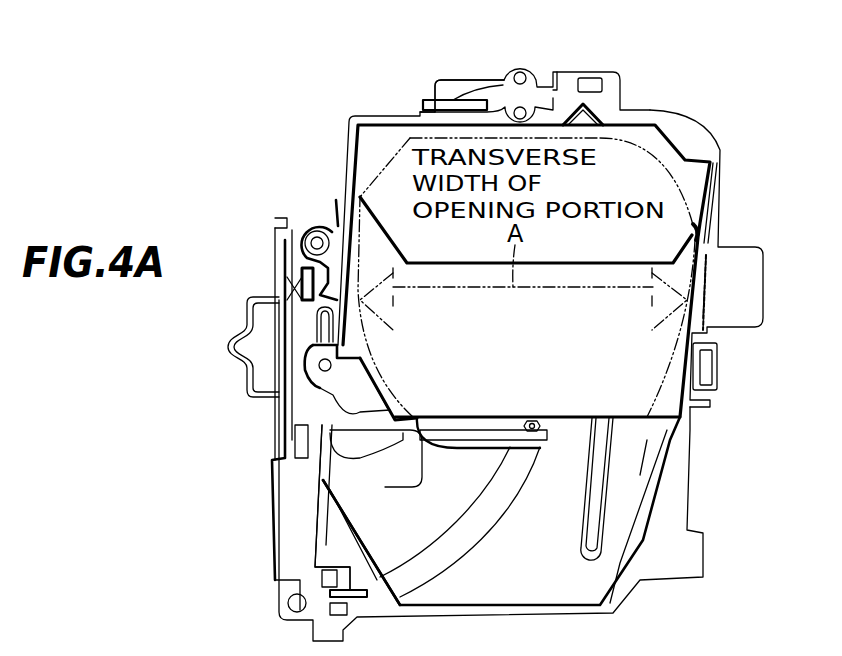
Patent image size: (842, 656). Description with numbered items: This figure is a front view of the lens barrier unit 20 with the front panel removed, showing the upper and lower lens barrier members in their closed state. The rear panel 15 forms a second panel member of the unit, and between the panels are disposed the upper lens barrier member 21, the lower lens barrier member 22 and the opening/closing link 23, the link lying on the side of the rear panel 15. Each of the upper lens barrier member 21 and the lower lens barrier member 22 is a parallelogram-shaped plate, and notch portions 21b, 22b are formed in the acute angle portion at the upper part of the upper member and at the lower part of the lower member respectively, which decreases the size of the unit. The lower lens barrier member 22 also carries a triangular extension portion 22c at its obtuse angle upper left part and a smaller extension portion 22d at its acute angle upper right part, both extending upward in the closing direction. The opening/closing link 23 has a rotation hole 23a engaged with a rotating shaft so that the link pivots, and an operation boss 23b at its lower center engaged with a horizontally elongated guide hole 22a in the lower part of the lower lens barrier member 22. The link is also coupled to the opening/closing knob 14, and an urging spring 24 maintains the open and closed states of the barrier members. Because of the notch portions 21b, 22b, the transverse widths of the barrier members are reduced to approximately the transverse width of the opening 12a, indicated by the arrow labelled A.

The lens barrier unit 20 is at (268, 66).
The rear panel 15 is at (347, 140).
The upper lens barrier member 21 is at (652, 137).
The notch portion 21b is at (686, 166).
The lower lens barrier member 22 is at (670, 392).
The guide hole 22a is at (470, 432).
The notch portion 22b is at (377, 390).
The triangular extension portion 22c is at (362, 227).
The extension portion 22d is at (697, 241).
The opening/closing link 23 is at (330, 388).
The rotation hole 23a is at (320, 372).
The operation boss 23b is at (540, 430).
The urging spring 24 is at (306, 237).
The opening/closing knob 14 is at (240, 350).
The opening 12a is at (640, 403).